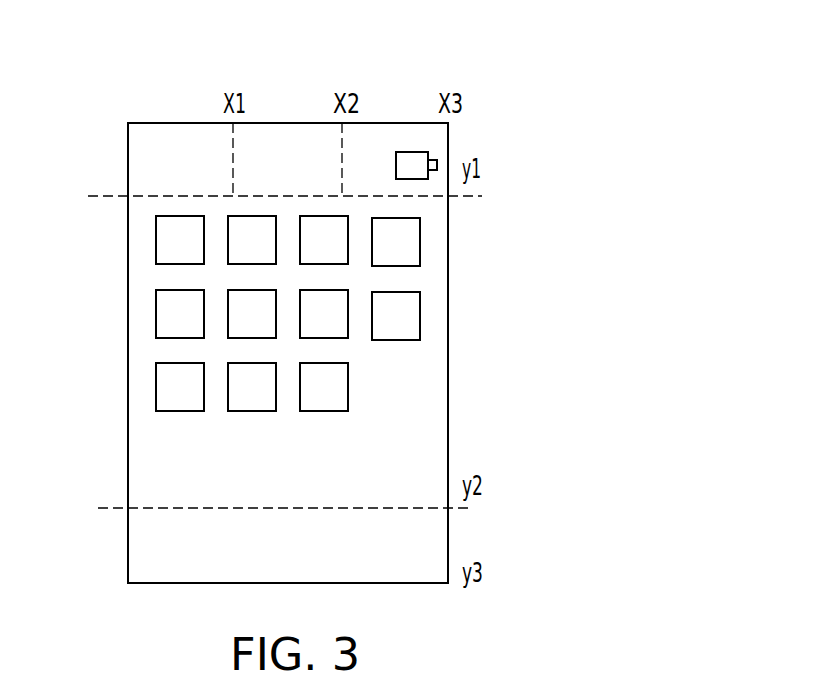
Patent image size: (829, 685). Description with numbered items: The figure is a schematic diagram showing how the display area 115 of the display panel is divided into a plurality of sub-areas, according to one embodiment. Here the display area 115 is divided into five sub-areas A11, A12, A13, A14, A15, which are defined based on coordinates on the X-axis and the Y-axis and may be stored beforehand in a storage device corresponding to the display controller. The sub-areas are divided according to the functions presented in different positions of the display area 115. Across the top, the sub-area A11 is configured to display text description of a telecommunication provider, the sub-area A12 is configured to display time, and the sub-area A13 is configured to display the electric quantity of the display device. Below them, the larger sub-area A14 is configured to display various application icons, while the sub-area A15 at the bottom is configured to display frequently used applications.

The display area 115 is at (400, 583).
The sub-area A11 is at (190, 133).
The sub-area A12 is at (287, 133).
The sub-area A13 is at (391, 133).
The sub-area A14 is at (177, 440).
The sub-area A15 is at (177, 532).